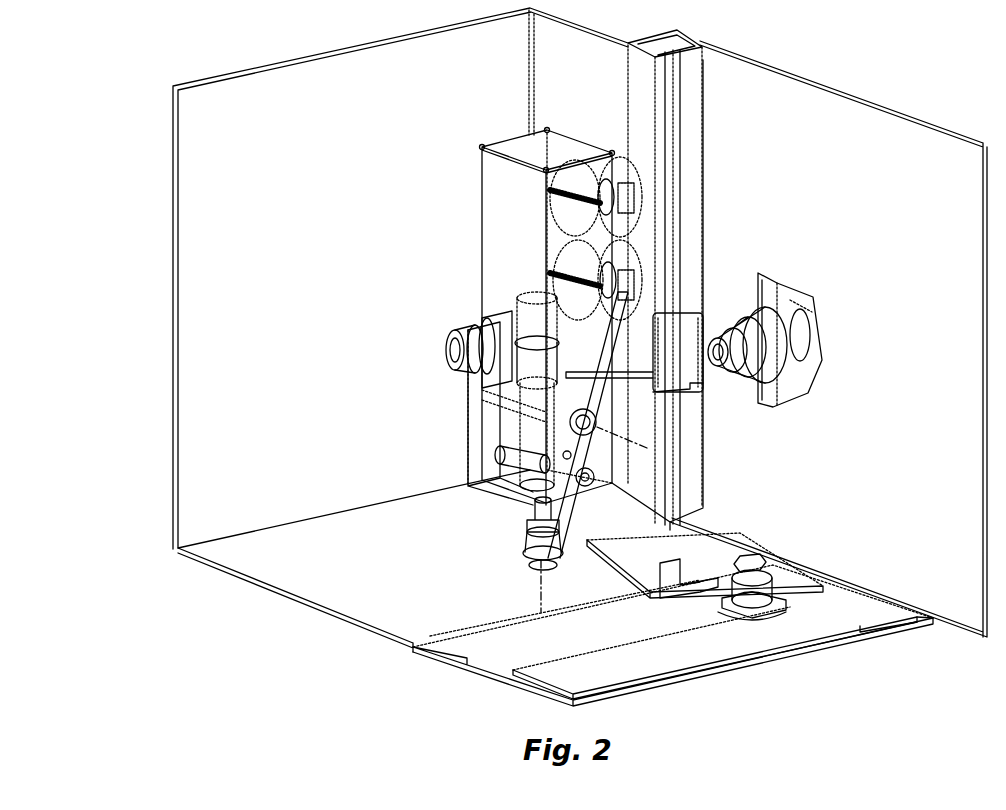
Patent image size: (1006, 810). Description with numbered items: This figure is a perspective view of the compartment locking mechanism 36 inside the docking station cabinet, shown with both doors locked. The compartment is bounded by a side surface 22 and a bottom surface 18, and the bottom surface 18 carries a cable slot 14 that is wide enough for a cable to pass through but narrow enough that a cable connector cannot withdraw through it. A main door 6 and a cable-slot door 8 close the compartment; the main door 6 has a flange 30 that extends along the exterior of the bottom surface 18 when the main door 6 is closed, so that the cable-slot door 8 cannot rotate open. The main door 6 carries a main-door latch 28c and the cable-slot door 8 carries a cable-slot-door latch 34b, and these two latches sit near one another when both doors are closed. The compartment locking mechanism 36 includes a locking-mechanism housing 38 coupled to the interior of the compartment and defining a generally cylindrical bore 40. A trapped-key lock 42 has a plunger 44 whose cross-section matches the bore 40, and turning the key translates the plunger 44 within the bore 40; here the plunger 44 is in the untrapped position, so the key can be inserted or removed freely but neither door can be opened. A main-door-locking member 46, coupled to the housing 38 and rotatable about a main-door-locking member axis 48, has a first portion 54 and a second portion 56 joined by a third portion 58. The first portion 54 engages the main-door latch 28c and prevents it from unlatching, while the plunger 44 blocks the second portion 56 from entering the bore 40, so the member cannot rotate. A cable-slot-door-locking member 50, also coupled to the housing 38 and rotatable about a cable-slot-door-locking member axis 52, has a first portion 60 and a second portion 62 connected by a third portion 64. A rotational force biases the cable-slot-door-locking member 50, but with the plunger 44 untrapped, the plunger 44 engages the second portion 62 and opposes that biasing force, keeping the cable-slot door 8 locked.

The main door 6 is at (828, 339).
The cable-slot door 8 is at (500, 665).
The cable slot 14 is at (531, 654).
The bottom surface 18 is at (295, 600).
The side surface 22 is at (400, 278).
The main-door latch 28c is at (739, 277).
The flange 30 is at (930, 625).
The cable-slot-door latch 34b is at (768, 557).
The compartment locking mechanism 36 is at (441, 411).
The locking-mechanism housing 38 is at (561, 317).
The bore 40 is at (534, 297).
The trapped-key lock 42 is at (455, 269).
The plunger 44 is at (533, 342).
The main-door-locking member 46 is at (657, 280).
The main-door-locking member axis 48 is at (648, 447).
The cable-slot-door-locking member 50 is at (606, 578).
The cable-slot-door-locking member axis 52 is at (538, 590).
The first portion 54 is at (659, 300).
The second portion 56 is at (528, 466).
The third portion 58 is at (592, 398).
The first portion 60 is at (664, 567).
The second portion 62 is at (568, 455).
The third portion 64 is at (560, 513).